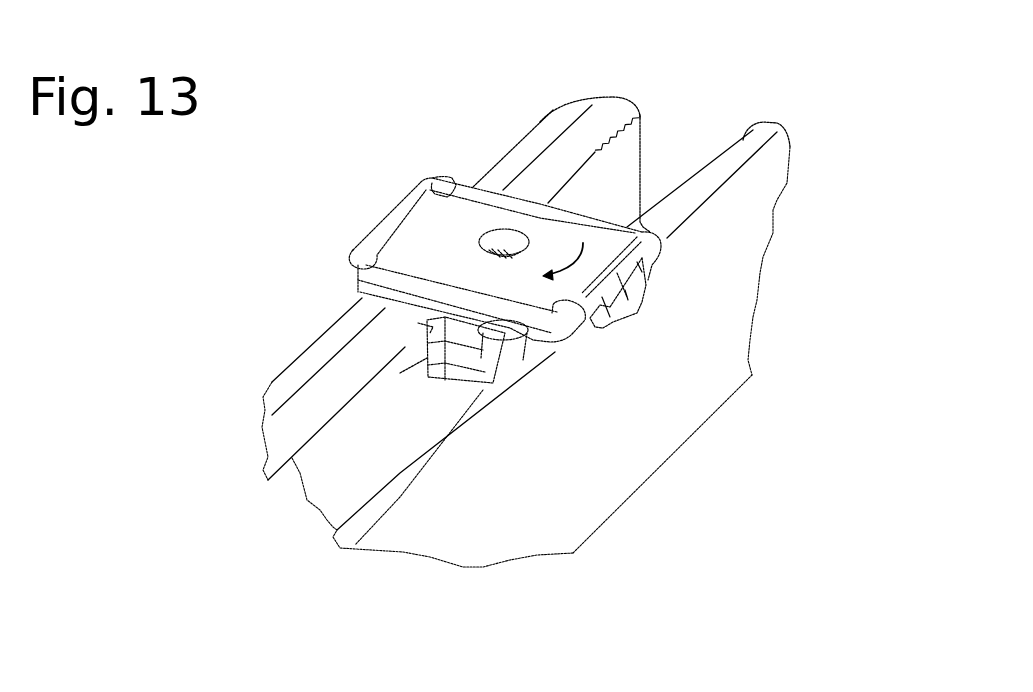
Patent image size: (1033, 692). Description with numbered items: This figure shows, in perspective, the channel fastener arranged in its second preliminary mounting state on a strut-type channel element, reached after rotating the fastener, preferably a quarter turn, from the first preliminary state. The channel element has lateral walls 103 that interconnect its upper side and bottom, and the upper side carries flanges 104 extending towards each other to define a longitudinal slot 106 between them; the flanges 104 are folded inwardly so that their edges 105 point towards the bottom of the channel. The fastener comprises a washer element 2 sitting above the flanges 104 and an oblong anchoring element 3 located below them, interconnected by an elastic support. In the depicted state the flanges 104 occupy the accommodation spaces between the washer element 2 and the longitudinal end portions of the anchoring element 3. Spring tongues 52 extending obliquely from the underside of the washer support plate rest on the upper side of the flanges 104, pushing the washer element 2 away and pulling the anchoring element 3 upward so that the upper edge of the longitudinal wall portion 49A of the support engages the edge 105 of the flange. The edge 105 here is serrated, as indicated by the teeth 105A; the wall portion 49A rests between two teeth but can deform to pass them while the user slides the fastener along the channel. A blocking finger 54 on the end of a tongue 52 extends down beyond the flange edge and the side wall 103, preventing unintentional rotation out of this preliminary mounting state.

The washer element 2 is at (462, 225).
The anchoring element 3 is at (507, 353).
The longitudinal wall portion 49A is at (412, 365).
The tongue 52 is at (633, 297).
The blocking finger 54 is at (640, 322).
The lateral wall 103 is at (625, 163).
The flange 104 is at (349, 325).
The edge 105 is at (583, 175).
The serration 105A is at (628, 121).
The longitudinal slot 106 is at (370, 438).